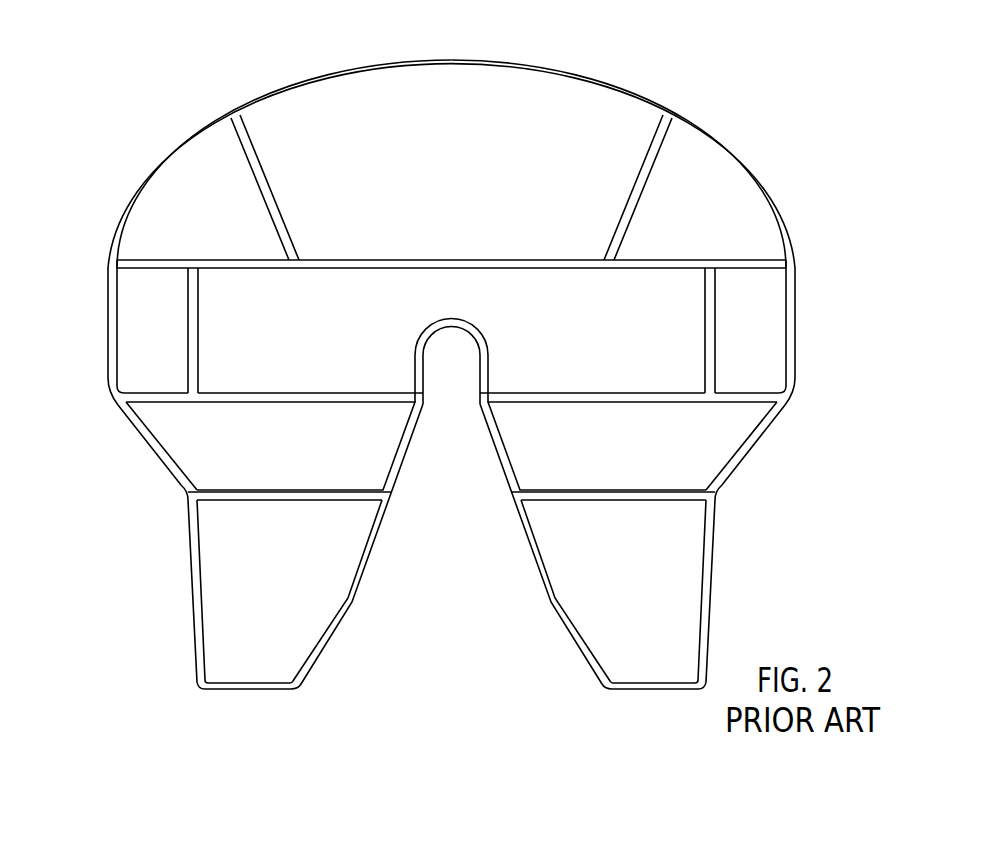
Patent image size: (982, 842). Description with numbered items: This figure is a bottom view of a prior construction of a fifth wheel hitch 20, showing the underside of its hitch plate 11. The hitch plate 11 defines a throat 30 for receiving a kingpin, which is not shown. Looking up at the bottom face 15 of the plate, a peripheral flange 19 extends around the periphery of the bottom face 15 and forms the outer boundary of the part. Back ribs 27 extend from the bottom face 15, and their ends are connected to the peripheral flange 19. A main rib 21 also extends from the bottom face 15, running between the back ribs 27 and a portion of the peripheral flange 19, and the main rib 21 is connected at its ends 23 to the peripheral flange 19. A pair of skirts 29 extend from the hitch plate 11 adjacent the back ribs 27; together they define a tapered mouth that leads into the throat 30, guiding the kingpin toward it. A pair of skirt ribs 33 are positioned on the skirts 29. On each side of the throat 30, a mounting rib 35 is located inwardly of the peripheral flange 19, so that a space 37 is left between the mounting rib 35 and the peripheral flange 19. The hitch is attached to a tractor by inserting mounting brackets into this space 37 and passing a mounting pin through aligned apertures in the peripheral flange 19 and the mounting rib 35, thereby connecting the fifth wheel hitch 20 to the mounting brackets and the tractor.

The hitch plate 11 is at (354, 100).
The bottom face 15 is at (512, 82).
The peripheral flange 19 is at (755, 175).
The fifth wheel hitch 20 is at (712, 98).
The main rib 21 is at (635, 265).
The ends 23 is at (115, 395).
The back ribs 27 is at (303, 390).
The skirts 29 is at (222, 622).
The throat 30 is at (483, 330).
The skirt ribs 33 is at (213, 502).
The mounting rib 35 is at (200, 295).
The space 37 is at (128, 303).